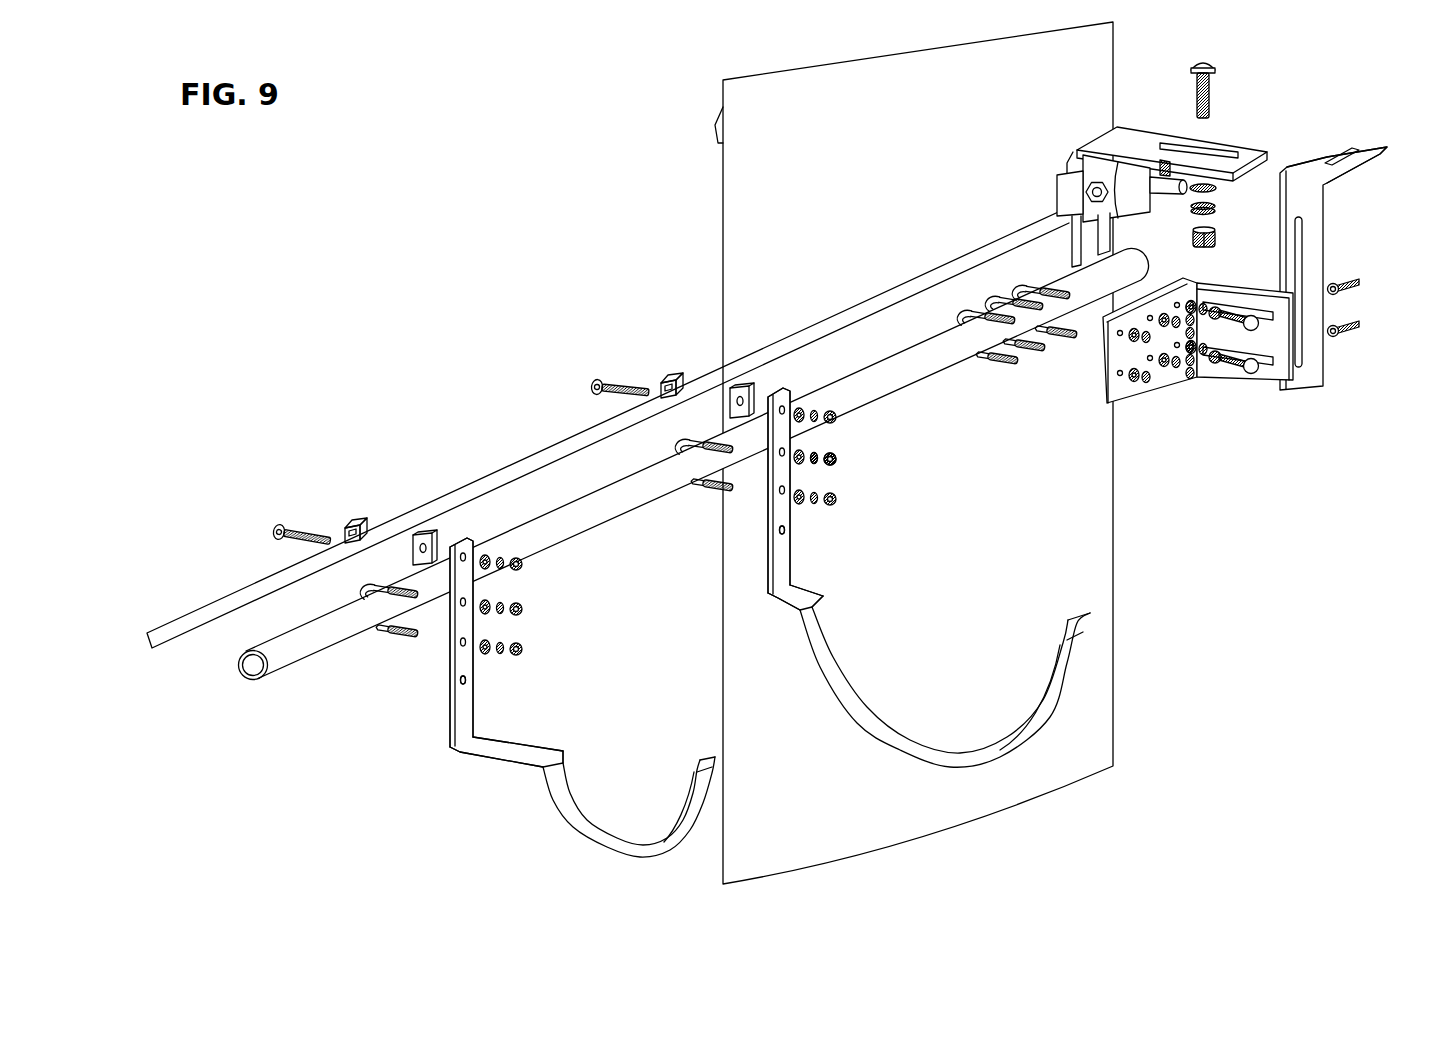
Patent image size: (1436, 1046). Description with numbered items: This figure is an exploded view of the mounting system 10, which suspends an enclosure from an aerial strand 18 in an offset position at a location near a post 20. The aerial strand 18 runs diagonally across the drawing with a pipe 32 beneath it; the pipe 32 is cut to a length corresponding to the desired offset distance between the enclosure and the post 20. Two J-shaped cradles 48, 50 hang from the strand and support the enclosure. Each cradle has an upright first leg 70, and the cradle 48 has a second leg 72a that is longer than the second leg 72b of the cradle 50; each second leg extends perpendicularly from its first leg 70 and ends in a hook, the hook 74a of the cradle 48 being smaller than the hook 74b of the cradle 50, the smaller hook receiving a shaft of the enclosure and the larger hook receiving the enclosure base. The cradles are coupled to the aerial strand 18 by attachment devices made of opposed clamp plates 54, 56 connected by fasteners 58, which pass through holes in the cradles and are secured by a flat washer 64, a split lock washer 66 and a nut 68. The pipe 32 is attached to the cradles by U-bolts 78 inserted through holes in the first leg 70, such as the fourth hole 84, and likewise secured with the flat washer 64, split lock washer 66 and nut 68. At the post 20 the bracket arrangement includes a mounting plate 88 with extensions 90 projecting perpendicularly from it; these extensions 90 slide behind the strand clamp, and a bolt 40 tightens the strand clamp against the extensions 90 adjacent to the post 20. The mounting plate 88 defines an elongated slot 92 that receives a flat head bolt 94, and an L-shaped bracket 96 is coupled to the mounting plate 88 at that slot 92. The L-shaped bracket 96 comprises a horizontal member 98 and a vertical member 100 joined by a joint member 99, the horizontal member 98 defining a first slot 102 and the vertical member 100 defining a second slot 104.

The mounting system 10 is at (628, 172).
The aerial strand 18 is at (500, 483).
The post 20 is at (840, 158).
The pipe 32 is at (578, 523).
The bolt 40 is at (1170, 197).
The J-shaped cradle 48 is at (507, 780).
The J-shaped cradle 50 is at (903, 665).
The clamp plate 54 is at (420, 529).
The clamp plate 56 is at (356, 520).
The fastener 58 is at (278, 524).
The flat washer 64 is at (806, 456).
The split lock washer 66 is at (822, 463).
The nut 68 is at (843, 460).
The first leg 70 is at (450, 710).
The second leg 72a is at (516, 745).
The second leg 72b is at (790, 606).
The hook 74a is at (598, 858).
The hook 74b is at (891, 758).
The U-bolt 78 is at (381, 632).
The fourth hole 84 is at (467, 680).
The mounting plate 88 is at (1135, 127).
The extension 90 is at (1071, 255).
The elongated slot 92 is at (1237, 150).
The flat head bolt 94 is at (1215, 66).
The L-shaped bracket 96 is at (1346, 183).
The horizontal member 98 is at (1375, 151).
The joint member 99 is at (1283, 182).
The vertical member 100 is at (1318, 375).
The first slot 102 is at (1338, 150).
The second slot 104 is at (1305, 250).